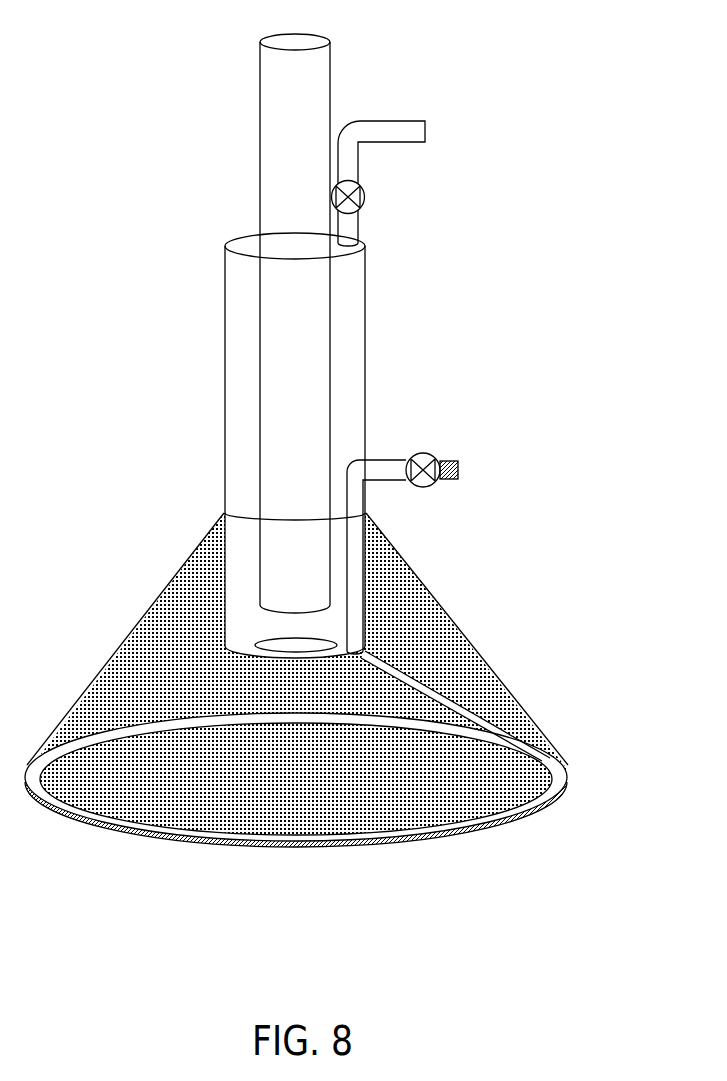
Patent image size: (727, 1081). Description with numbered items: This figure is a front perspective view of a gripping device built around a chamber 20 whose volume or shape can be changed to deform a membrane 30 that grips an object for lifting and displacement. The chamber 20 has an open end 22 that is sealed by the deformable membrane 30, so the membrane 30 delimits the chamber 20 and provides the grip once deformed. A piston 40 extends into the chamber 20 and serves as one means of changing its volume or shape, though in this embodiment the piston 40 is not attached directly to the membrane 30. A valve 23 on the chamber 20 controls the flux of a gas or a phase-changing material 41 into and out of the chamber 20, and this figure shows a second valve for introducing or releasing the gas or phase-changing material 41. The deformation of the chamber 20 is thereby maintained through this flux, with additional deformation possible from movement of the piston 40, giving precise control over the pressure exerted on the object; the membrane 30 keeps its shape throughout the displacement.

The chamber 20 is at (353, 332).
The open end 22 is at (540, 807).
The valve 23 is at (433, 453).
The deformable membrane 30 is at (447, 655).
The piston 40 is at (332, 70).
The phase-changing material 41 is at (362, 577).